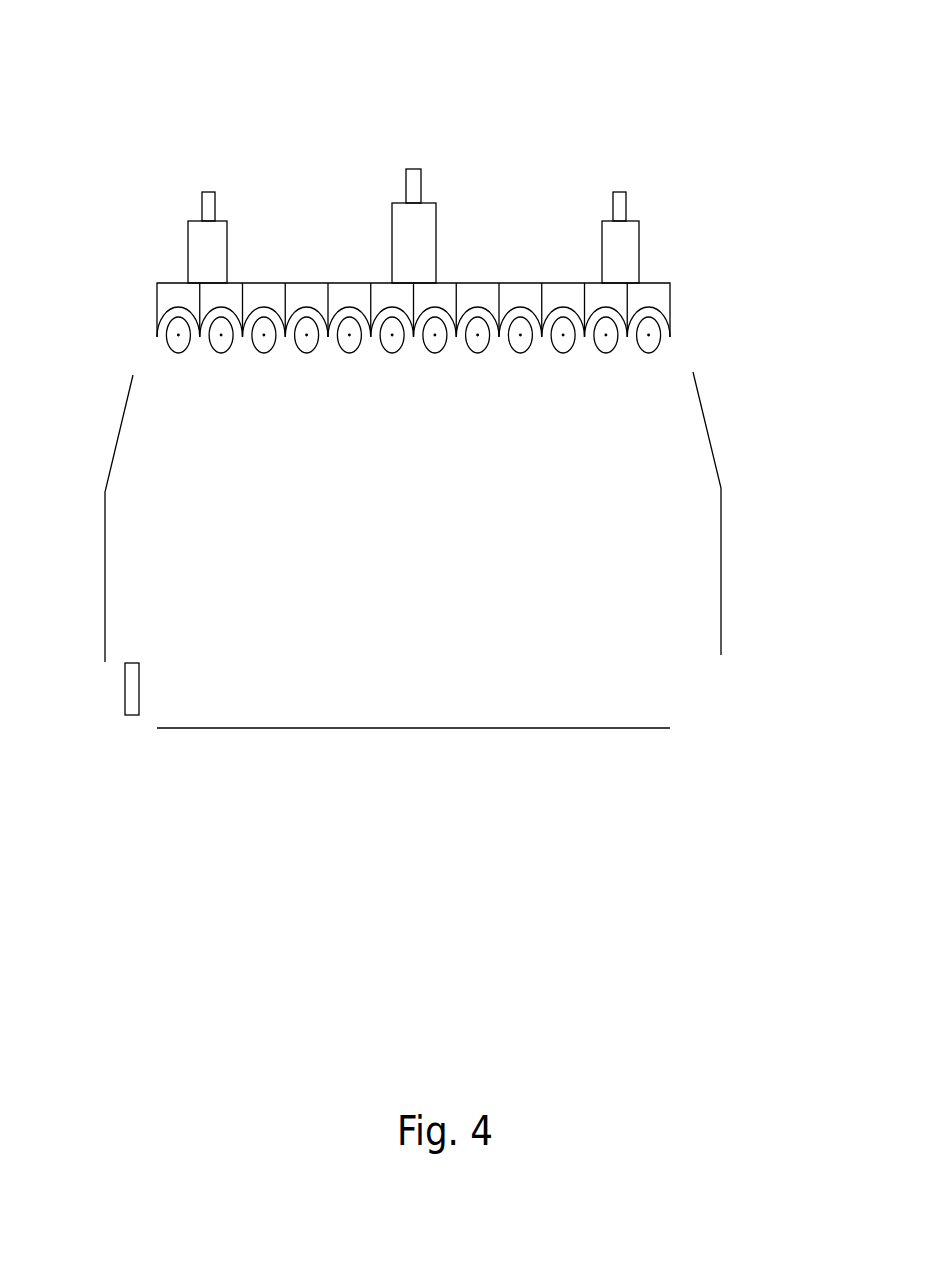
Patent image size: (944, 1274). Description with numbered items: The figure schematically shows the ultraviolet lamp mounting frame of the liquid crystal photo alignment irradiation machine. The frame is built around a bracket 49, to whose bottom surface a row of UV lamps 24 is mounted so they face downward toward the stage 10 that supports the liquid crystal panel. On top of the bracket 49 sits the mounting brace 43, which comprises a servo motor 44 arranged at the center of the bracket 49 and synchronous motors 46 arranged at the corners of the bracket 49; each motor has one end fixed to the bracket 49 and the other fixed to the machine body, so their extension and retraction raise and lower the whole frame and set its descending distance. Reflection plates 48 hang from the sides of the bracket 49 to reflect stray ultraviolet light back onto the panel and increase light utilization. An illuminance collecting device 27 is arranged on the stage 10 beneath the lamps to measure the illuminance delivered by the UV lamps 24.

The stage 10 is at (415, 728).
The UV lamps 24 is at (649, 334).
The illuminance collecting device 27 is at (133, 693).
The mounting brace 43 is at (485, 144).
The servo motor 44 is at (409, 250).
The synchronous motors 46 is at (684, 186).
The reflection plates 48 is at (721, 488).
The bracket 49 is at (172, 293).